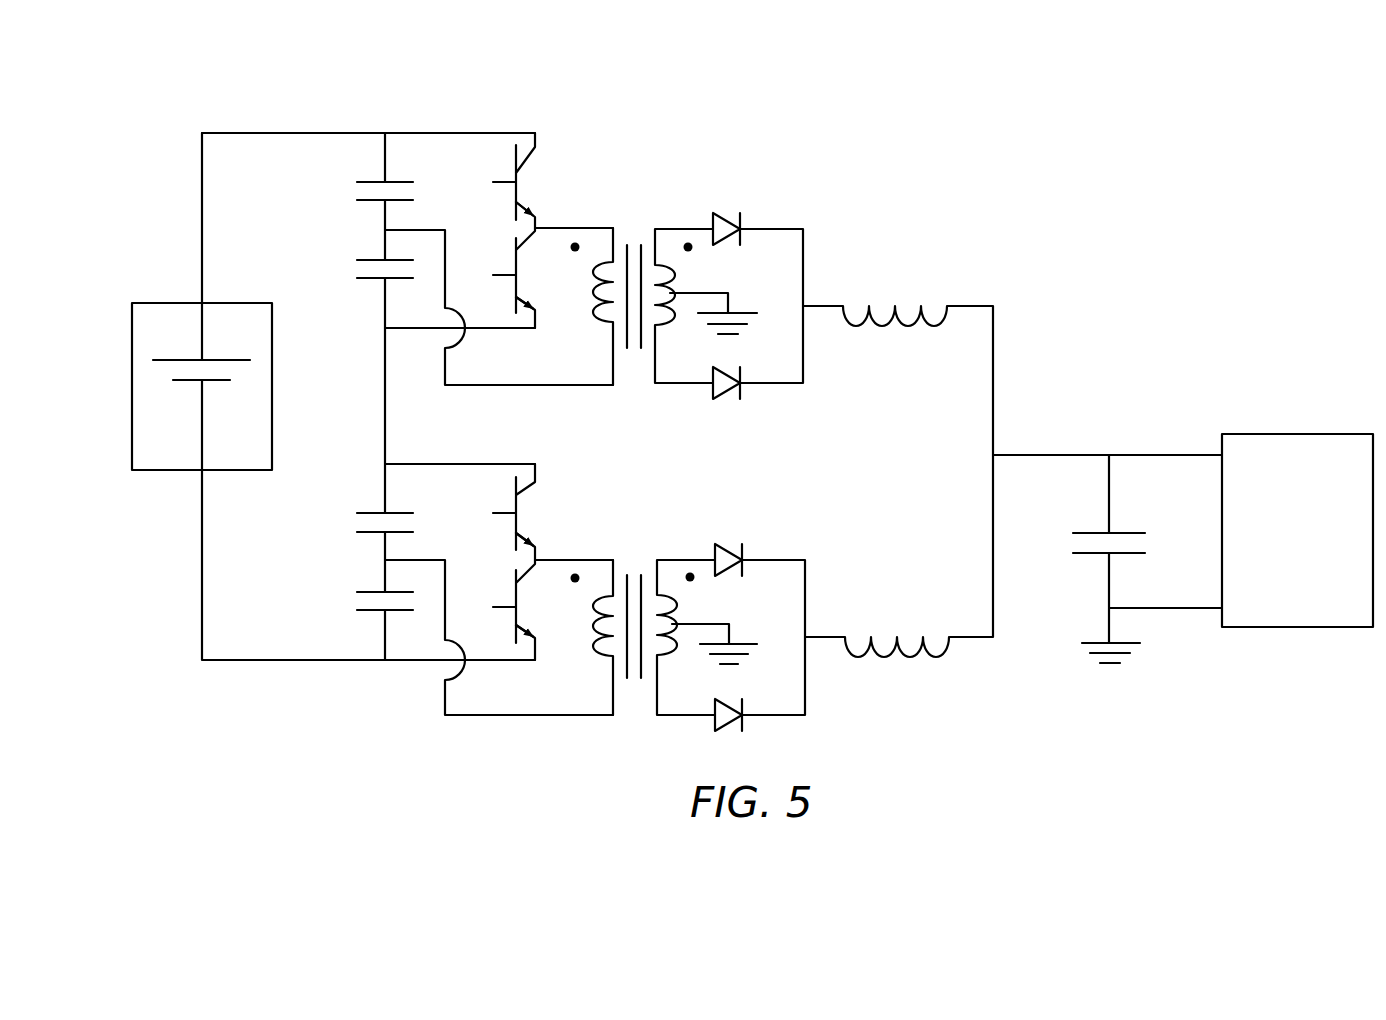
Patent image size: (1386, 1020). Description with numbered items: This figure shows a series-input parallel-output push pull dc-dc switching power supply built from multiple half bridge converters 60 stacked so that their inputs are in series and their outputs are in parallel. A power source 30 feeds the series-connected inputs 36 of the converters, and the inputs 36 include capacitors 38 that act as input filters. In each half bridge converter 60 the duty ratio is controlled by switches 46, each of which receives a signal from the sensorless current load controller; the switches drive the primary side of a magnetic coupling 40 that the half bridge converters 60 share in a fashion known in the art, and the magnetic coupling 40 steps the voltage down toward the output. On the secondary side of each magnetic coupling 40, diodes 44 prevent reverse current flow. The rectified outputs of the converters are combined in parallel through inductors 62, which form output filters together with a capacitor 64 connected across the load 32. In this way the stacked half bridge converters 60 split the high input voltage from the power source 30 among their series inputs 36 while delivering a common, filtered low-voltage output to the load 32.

The power source 30 is at (165, 303).
The load 32 is at (1262, 434).
The inputs 36 is at (385, 133).
The capacitors 38 is at (359, 182).
The magnetic coupling 40 is at (636, 222).
The diode 44 is at (716, 213).
The switch 46 is at (517, 173).
The half bridge converters 60 is at (580, 362).
The inductors 62 is at (897, 305).
The capacitor 64 is at (1122, 532).